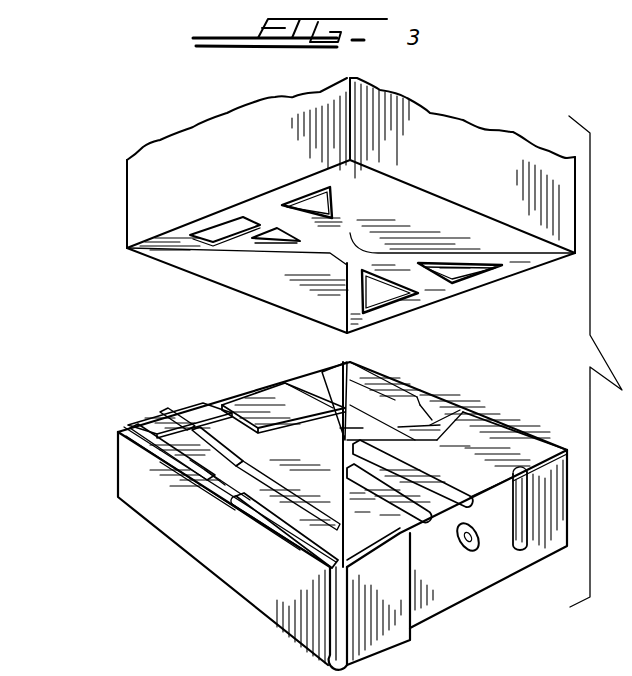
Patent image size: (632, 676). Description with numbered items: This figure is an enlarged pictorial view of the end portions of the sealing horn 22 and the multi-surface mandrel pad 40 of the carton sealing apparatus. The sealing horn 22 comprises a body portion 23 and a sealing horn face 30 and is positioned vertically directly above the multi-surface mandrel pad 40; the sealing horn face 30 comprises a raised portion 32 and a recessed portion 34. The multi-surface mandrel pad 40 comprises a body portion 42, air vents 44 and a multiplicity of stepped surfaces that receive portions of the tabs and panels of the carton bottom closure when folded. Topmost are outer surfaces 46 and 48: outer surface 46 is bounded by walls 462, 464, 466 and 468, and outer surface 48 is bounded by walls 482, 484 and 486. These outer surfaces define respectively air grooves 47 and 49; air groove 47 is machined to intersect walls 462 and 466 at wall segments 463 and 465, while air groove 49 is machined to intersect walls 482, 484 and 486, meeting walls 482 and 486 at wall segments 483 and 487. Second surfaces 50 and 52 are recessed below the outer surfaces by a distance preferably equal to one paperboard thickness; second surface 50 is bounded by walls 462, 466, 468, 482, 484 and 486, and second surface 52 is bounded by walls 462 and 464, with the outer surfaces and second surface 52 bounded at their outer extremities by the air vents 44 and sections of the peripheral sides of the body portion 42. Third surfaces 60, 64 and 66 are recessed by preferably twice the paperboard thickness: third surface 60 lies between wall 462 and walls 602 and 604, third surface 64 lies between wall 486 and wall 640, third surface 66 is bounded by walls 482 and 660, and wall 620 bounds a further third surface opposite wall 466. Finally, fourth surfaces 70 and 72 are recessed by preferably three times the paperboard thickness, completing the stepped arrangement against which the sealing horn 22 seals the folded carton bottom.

The sealing horn 22 is at (118, 226).
The body portion 23 is at (137, 175).
The sealing horn face 30 is at (487, 297).
The raised portion 32 is at (338, 213).
The recessed portion 34 is at (453, 217).
The multi-surface mandrel pad 40 is at (514, 412).
The body portion 42 is at (557, 547).
The air vents 44 is at (253, 403).
The outer surface 46 is at (176, 408).
The air groove 47 is at (300, 380).
The outer surface 48 is at (382, 584).
The air groove 49 is at (510, 478).
The second surface 50 is at (390, 430).
The second surface 52 is at (163, 415).
The third surface 60 is at (163, 462).
The third surface 64 is at (497, 430).
The third surface 66 is at (307, 527).
The fourth surface 70 is at (215, 482).
The fourth surface 72 is at (425, 405).
The wall 462 is at (160, 433).
The wall segment 463 is at (262, 450).
The wall 464 is at (170, 420).
The wall segment 465 is at (340, 400).
The wall 466 is at (352, 380).
The wall 468 is at (356, 386).
The wall 482 is at (312, 565).
The wall segment 483 is at (380, 580).
The wall 484 is at (430, 510).
The wall 486 is at (523, 447).
The wall segment 487 is at (440, 420).
The wall 602 is at (217, 480).
The wall 604 is at (273, 447).
The wall 620 is at (420, 405).
The wall 640 is at (450, 415).
The wall 660 is at (238, 505).